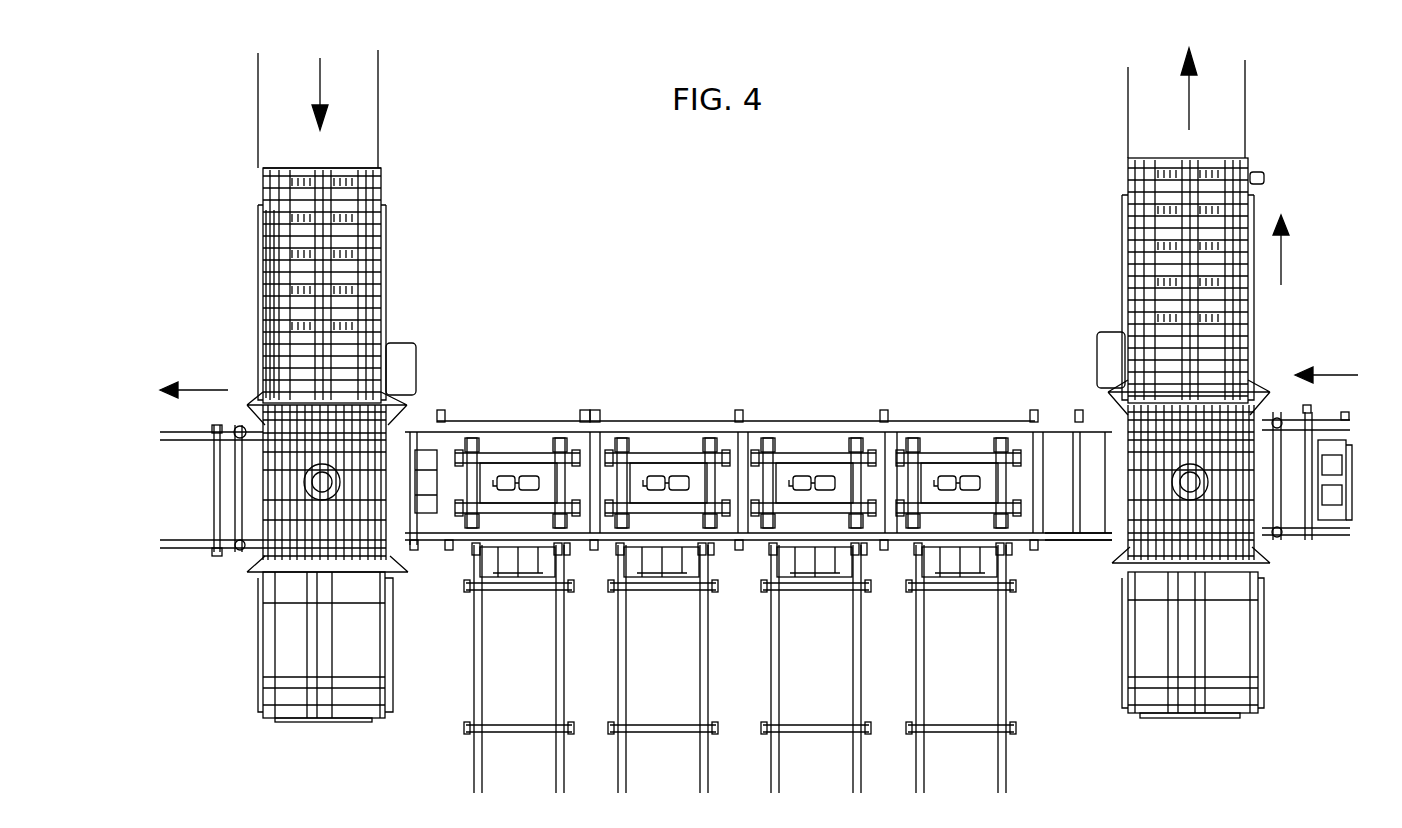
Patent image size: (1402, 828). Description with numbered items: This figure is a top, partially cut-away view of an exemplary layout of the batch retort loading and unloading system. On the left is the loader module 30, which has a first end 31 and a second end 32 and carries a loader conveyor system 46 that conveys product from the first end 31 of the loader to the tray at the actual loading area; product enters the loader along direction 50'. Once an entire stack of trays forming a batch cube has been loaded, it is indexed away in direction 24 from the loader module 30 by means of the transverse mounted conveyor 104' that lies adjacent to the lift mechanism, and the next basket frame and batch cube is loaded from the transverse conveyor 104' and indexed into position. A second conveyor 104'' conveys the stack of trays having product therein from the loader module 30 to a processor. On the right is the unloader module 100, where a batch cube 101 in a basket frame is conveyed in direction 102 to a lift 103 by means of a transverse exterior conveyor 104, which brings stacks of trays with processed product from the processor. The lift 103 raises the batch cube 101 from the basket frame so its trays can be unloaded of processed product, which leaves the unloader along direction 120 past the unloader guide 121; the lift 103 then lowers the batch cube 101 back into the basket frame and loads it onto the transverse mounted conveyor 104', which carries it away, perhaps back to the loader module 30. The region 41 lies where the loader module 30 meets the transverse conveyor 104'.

The indexing-away direction 24 is at (222, 390).
The loader module 30 is at (392, 302).
The first end 31 is at (386, 168).
The second end 32 is at (262, 716).
The tower transfer section 41 is at (390, 437).
The loader conveyor system 46 is at (265, 332).
The product infeed arrow 50' is at (323, 113).
The unloader module 100 is at (1263, 603).
The batch cube 101 is at (1163, 493).
The conveying direction 102 is at (1332, 372).
The lift 103 is at (1088, 553).
The transverse exterior conveyor 104 is at (1327, 496).
The transverse mounted conveyor 104' is at (758, 450).
The second conveyor 104'' is at (211, 526).
The outfeed direction arrow 120 is at (1284, 258).
The second tower outfeed guide 121 is at (1127, 142).